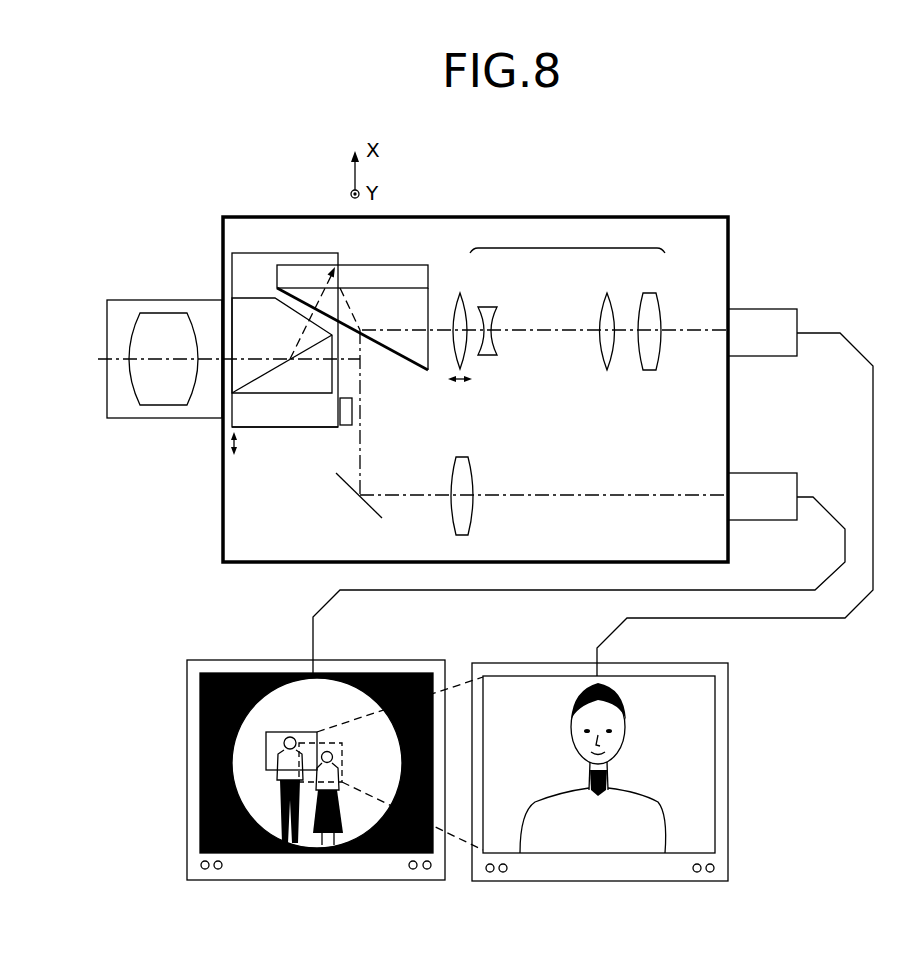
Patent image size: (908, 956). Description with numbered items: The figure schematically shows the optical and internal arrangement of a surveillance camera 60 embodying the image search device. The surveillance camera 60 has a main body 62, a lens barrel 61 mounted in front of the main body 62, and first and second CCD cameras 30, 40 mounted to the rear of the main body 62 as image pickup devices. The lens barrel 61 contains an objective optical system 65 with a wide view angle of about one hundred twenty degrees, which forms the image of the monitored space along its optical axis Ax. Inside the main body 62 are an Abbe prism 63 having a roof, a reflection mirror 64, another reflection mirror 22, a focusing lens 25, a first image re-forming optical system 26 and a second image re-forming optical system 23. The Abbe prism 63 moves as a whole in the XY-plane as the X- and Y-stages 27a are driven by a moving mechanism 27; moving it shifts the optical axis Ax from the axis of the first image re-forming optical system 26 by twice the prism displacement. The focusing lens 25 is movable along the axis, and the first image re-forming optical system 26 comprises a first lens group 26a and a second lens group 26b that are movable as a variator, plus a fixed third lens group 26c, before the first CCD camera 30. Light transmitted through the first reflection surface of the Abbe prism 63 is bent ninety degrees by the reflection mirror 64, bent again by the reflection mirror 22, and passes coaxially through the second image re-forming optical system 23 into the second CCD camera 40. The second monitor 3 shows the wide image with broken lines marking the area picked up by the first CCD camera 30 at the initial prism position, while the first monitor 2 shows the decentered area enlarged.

The surveillance camera 60 is at (675, 174).
The lens barrel 61 is at (181, 300).
The objective optical system 65 is at (145, 313).
The optical axis Ax is at (210, 356).
The main body 62 is at (257, 217).
The Abbe prism 63 is at (264, 422).
The reflection mirror 64 is at (342, 343).
The moving mechanism 27 is at (345, 426).
The X- and Y-stages 27a is at (293, 428).
The focusing lens 25 is at (458, 292).
The first image re-forming optical system 26 is at (567, 238).
The first lens group 26a is at (490, 306).
The second lens group 26b is at (607, 293).
The third lens group 26c is at (650, 293).
The first CCD camera 30 is at (765, 308).
The second CCD camera 40 is at (763, 521).
The reflection mirror 22 is at (348, 490).
The second image re-forming optical system 23 is at (473, 517).
The second monitor 3 is at (187, 772).
The first monitor 2 is at (730, 773).